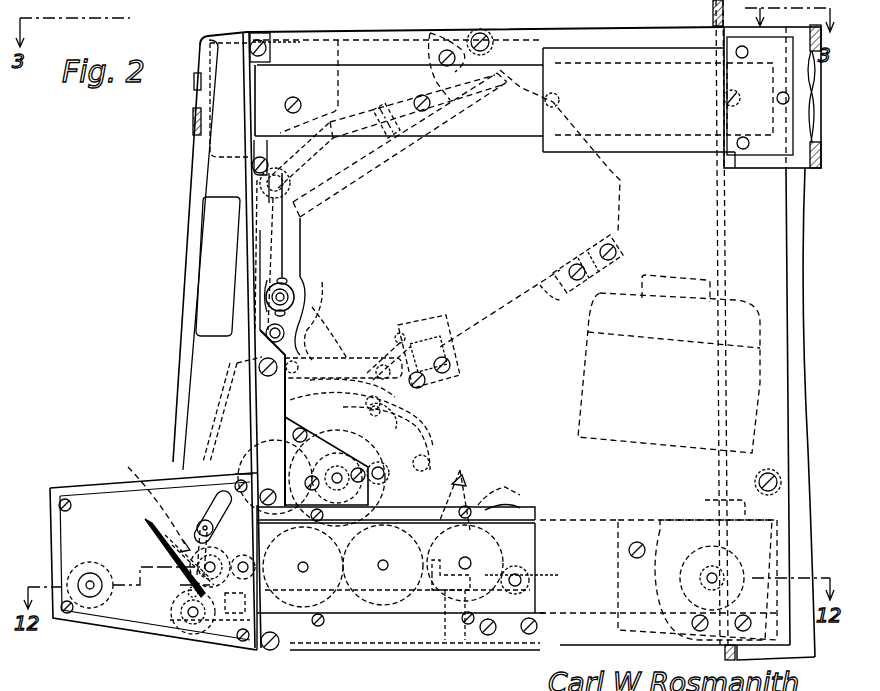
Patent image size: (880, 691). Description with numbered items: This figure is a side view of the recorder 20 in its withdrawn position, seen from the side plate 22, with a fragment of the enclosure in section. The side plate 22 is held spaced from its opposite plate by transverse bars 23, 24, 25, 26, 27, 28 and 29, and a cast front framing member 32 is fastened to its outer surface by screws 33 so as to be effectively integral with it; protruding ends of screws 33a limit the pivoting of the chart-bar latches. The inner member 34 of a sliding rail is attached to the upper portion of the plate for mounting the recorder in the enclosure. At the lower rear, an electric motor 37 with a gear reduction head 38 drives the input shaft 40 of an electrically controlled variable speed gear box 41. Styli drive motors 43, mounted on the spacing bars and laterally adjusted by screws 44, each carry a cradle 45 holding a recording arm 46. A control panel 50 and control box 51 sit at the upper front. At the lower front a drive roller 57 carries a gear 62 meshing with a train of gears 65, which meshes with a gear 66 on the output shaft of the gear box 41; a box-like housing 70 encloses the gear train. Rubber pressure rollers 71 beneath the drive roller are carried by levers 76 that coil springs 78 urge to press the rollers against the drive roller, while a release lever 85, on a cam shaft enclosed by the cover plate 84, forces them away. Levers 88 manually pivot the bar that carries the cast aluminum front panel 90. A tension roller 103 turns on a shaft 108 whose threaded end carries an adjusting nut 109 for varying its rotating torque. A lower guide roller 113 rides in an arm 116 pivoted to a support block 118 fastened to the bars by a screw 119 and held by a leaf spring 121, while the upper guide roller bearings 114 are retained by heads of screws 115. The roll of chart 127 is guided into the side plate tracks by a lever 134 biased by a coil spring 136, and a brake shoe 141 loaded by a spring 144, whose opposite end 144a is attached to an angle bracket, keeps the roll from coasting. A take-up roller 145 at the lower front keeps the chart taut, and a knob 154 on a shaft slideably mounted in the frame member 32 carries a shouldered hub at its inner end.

The recorder 20 is at (174, 154).
The side plate 22 is at (372, 52).
The transverse bar 23 is at (490, 38).
The transverse bar 24 is at (230, 640).
The transverse bar 25 is at (430, 407).
The transverse bar 26 is at (455, 360).
The transverse bar 27 is at (563, 290).
The transverse bar 28 is at (628, 235).
The transverse bar 29 is at (780, 470).
The front framing member 32 is at (182, 236).
The screws 33 is at (260, 44).
The screws 33a is at (252, 166).
The inner member of sliding rail 34 is at (520, 66).
The electric motor 37 is at (760, 385).
The gear reduction head 38 is at (770, 505).
The input shaft 40 is at (750, 576).
The variable speed gear box 41 is at (579, 520).
The styli drive motors 43 is at (436, 55).
The screws 44 is at (620, 268).
The cradle 45 is at (393, 122).
The recording arm 46 is at (296, 163).
The control panel 50 is at (195, 98).
The control box 51 is at (302, 38).
The drive roller 57 is at (145, 503).
The gear 62 is at (218, 620).
The train of gears 65 is at (352, 612).
The gear 66 is at (540, 553).
The box-like housing 70 is at (520, 509).
The pressure rollers 71 is at (165, 645).
The levers 76 is at (310, 645).
The coil springs 78 is at (424, 628).
The cover plate 84 is at (105, 505).
The release lever 85 is at (178, 595).
The levers 88 is at (206, 512).
The front panel 90 is at (205, 374).
The tension roller 103 is at (322, 300).
The shaft 108 is at (268, 322).
The adjusting nut 109 is at (267, 335).
The lower guide roller 113 is at (312, 332).
The bearings 114 is at (298, 295).
The screws 115 is at (305, 275).
The arm 116 is at (322, 350).
The support block 118 is at (440, 335).
The screw 119 is at (450, 390).
The leaf spring 121 is at (372, 345).
The roll of chart 127 is at (430, 443).
The lever 134 is at (420, 462).
The coil spring 136 is at (412, 420).
The brake shoe 141 is at (392, 620).
The spring 144 is at (505, 487).
The spring end 144a is at (545, 660).
The take-up roller 145 is at (110, 622).
The knob 154 is at (88, 584).